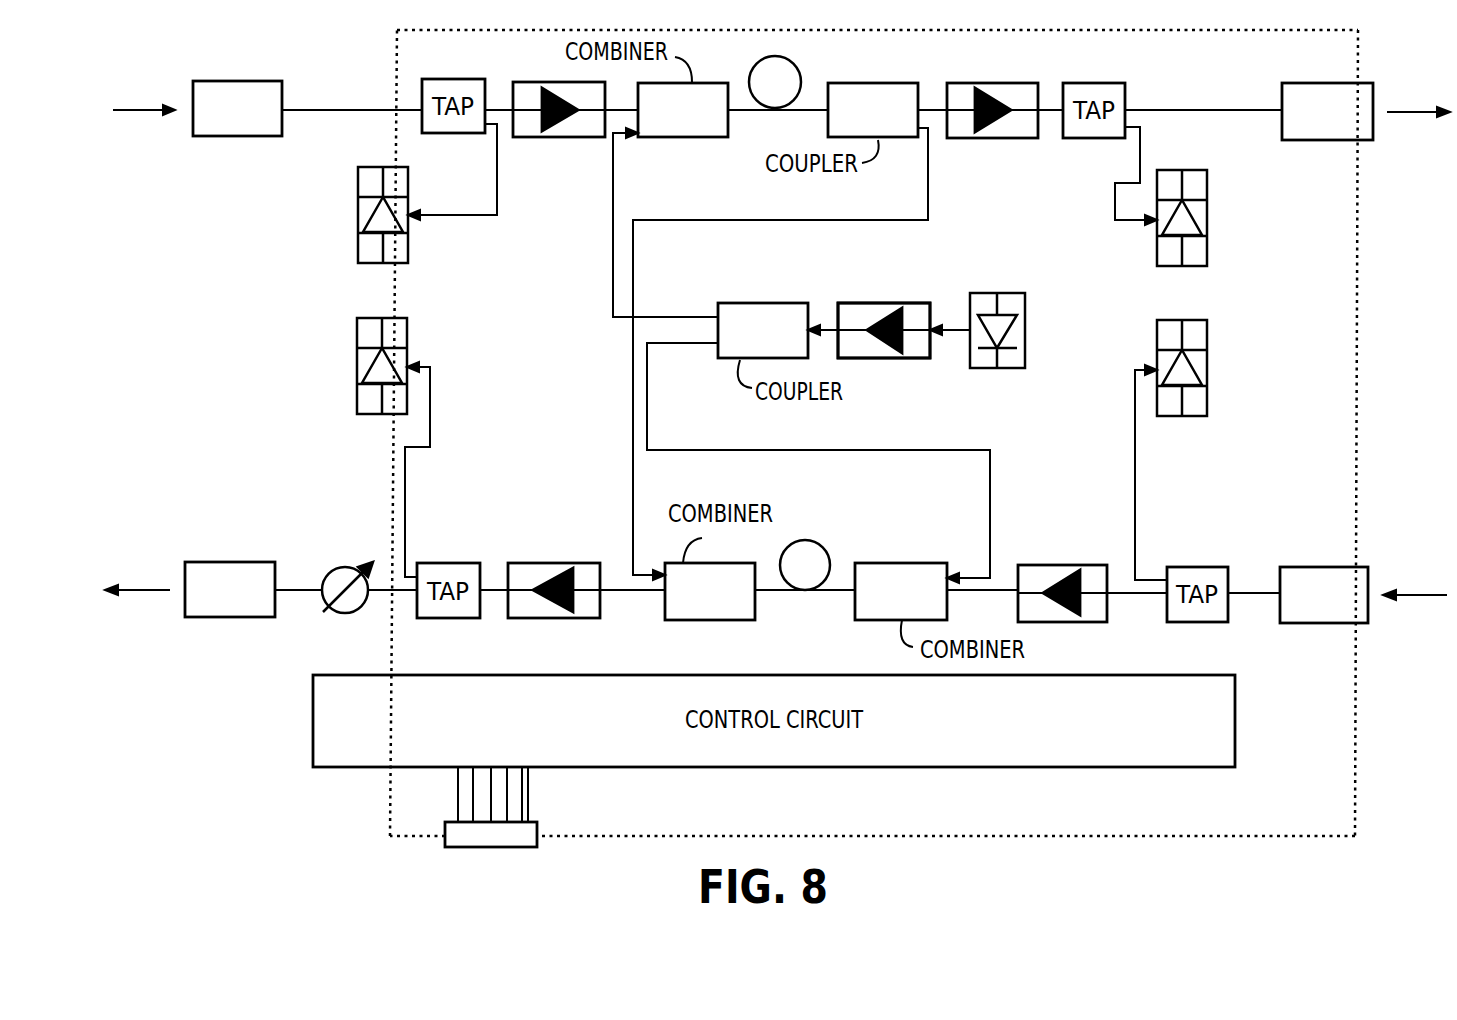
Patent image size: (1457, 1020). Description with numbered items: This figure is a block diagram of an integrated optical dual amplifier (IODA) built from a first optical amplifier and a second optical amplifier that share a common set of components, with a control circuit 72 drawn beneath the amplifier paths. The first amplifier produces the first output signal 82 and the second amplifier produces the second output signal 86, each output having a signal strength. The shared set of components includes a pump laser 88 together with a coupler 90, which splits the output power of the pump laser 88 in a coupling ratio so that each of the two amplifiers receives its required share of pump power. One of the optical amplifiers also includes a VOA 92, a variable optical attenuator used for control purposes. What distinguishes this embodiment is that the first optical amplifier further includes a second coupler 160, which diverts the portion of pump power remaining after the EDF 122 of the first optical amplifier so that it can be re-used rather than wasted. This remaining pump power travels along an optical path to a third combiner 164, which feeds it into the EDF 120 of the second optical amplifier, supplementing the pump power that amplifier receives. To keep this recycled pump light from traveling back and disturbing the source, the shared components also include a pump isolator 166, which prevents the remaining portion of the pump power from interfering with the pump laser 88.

The control circuit 72 is at (792, 768).
The first output signal 82 is at (1428, 113).
The second output signal 86 is at (143, 590).
The pump laser 88 is at (1027, 333).
The coupler 90 is at (764, 368).
The VOA 92 is at (348, 562).
The EDF of the second optical amplifier 120 is at (813, 530).
The EDF of the first optical amplifier 122 is at (787, 53).
The second coupler 160 is at (855, 144).
The third combiner 164 is at (710, 572).
The pump isolator 166 is at (887, 303).